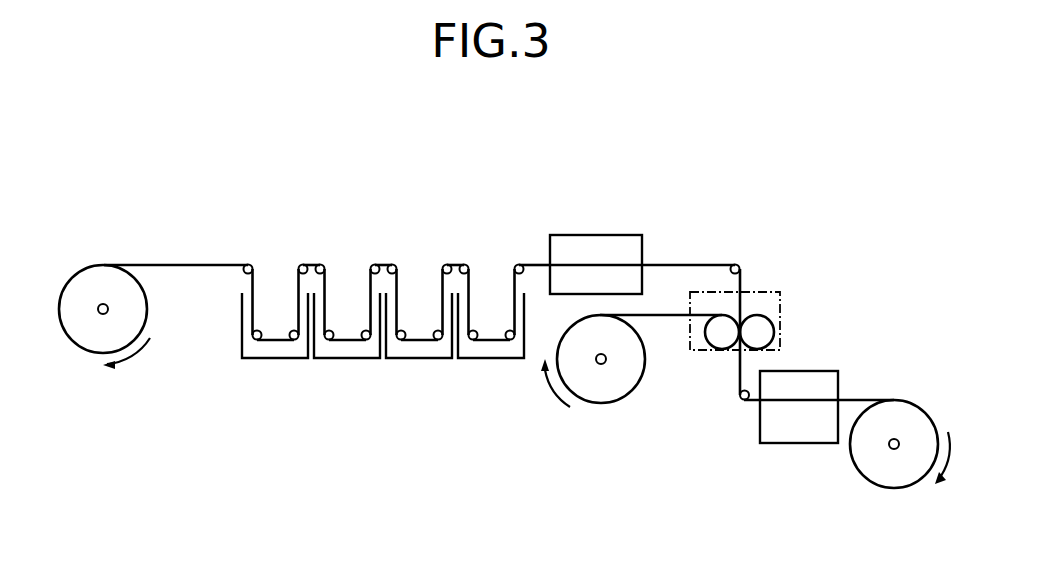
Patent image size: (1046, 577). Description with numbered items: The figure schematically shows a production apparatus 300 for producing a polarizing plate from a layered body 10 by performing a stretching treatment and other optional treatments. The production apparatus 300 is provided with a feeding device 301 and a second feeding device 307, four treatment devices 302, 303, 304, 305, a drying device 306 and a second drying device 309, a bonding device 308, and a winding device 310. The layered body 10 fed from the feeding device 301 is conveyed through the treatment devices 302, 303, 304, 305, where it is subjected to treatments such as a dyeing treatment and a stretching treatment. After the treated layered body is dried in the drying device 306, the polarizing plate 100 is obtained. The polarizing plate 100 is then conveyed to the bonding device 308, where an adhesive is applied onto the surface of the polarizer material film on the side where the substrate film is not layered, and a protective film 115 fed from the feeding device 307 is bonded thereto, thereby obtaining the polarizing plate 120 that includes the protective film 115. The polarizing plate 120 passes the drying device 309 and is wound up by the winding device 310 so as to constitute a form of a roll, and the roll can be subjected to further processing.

The production apparatus 300 is at (296, 163).
The layered body 10 is at (172, 262).
The feeding device 301 is at (85, 350).
The treatment device 302 is at (278, 359).
The treatment device 303 is at (350, 359).
The treatment device 304 is at (422, 359).
The treatment device 305 is at (494, 359).
The drying device 306 is at (593, 233).
The polarizing plate 100 is at (691, 262).
The feeding device 307 is at (602, 403).
The protective film 115 is at (657, 317).
The bonding device 308 is at (780, 302).
The polarizing plate 120 is at (862, 398).
The drying device 309 is at (802, 444).
The winding device 310 is at (894, 489).